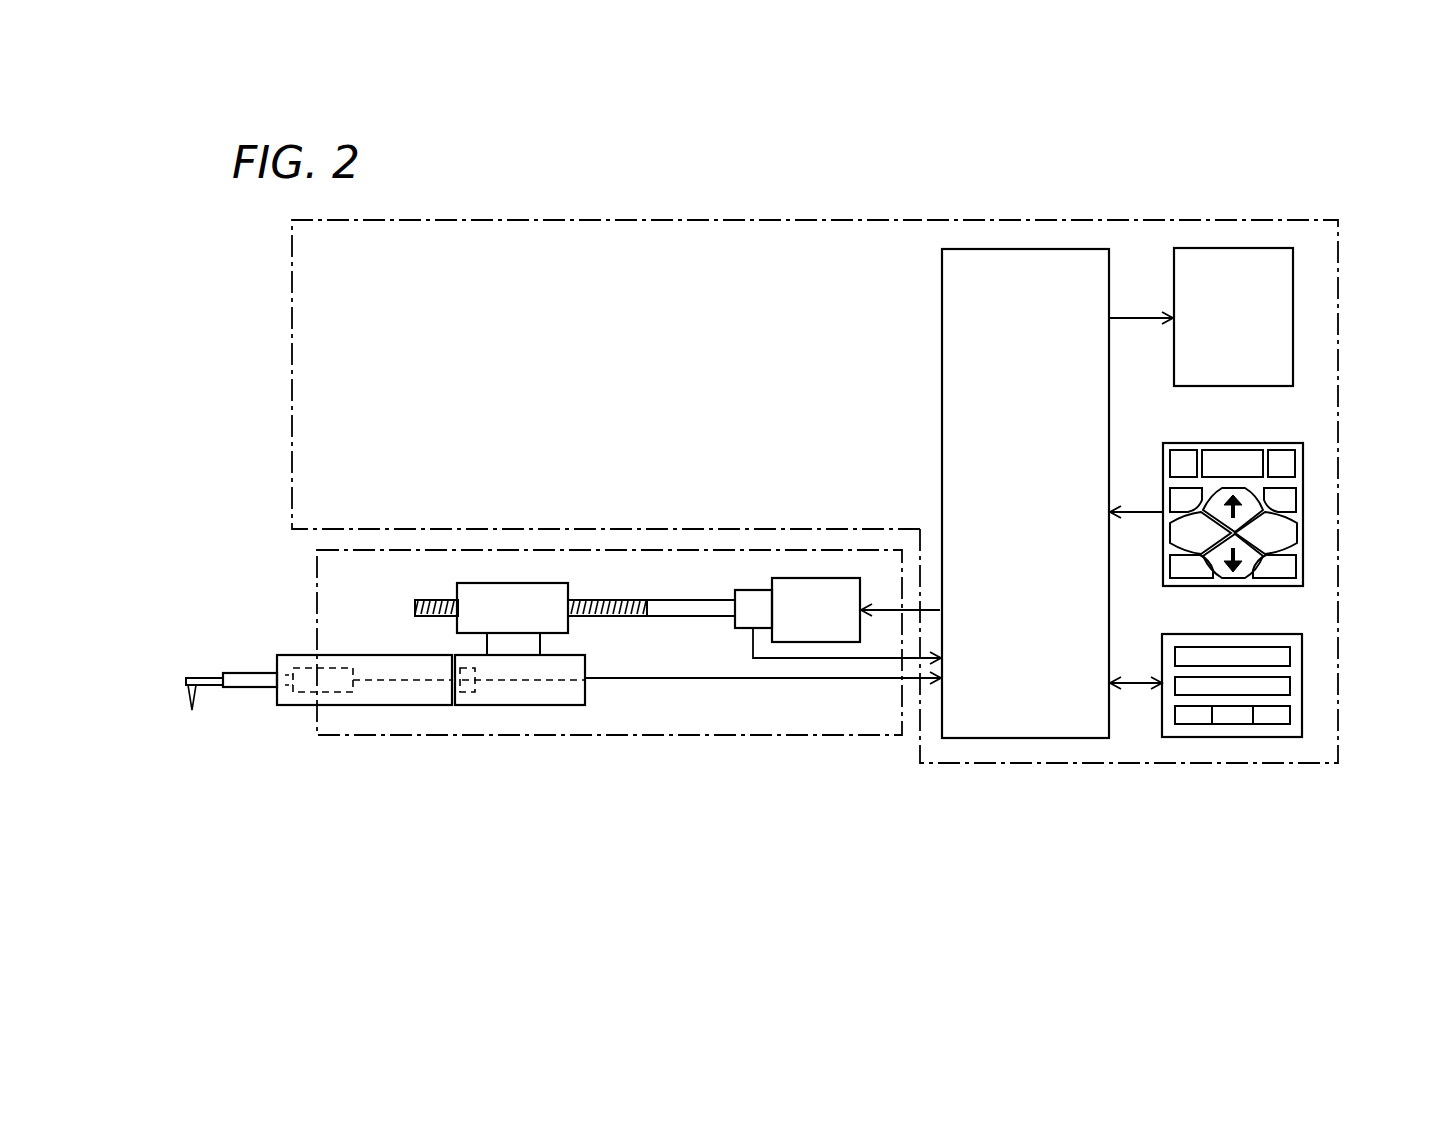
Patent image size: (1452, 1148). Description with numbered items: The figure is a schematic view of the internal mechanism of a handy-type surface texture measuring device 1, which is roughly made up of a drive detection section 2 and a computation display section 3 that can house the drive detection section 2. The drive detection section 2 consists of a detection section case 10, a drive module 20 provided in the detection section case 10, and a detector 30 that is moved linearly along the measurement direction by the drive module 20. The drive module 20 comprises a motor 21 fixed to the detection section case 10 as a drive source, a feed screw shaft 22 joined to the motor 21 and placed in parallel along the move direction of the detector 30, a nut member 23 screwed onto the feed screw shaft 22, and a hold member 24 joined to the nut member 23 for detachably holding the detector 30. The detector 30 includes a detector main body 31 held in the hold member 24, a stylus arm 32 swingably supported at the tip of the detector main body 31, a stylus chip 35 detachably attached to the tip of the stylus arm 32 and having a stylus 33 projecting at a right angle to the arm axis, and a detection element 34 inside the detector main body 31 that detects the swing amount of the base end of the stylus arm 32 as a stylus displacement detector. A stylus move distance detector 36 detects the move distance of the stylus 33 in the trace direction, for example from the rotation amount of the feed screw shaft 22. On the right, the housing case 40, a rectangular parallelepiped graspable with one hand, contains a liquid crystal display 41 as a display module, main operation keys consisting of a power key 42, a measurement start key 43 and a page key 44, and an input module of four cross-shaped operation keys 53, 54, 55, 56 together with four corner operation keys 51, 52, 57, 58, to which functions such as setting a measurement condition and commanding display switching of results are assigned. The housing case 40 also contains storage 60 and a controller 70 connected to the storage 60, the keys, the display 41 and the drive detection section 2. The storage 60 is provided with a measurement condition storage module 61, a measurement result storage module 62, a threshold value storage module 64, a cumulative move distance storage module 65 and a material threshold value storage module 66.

The surface texture measuring device 1 is at (622, 170).
The drive detection section 2 is at (317, 568).
The computation display section 3 is at (292, 300).
The detection section case 10 is at (808, 738).
The drive module 20 is at (742, 770).
The motor 21 is at (793, 583).
The feed screw shaft 22 is at (615, 618).
The nut member 23 is at (553, 590).
The hold member 24 is at (586, 690).
The detector 30 is at (252, 780).
The detector main body 31 is at (420, 706).
The stylus arm 32 is at (237, 688).
The stylus 33 is at (184, 703).
The detection element 34 is at (313, 706).
The stylus chip 35 is at (197, 678).
The stylus move distance detector 36 is at (740, 630).
The housing case 40 is at (845, 222).
The liquid crystal display 41 is at (1293, 323).
The power key 42 is at (1182, 452).
The measurement start key 43 is at (1228, 455).
The page key 44 is at (1280, 455).
The operation key 51 is at (1178, 500).
The operation key 52 is at (1288, 498).
The cross-shaped operation key 53 is at (1250, 509).
The cross-shaped operation key 54 is at (1178, 528).
The cross-shaped operation key 55 is at (1287, 533).
The cross-shaped operation key 56 is at (1232, 578).
The operation key 57 is at (1182, 578).
The operation key 58 is at (1287, 572).
The storage 60 is at (1302, 727).
The measurement condition storage module 61 is at (1290, 660).
The measurement result storage module 62 is at (1290, 690).
The threshold value storage module 64 is at (1185, 724).
The cumulative move distance storage module 65 is at (1228, 724).
The material threshold value storage module 66 is at (1265, 724).
The controller 70 is at (1033, 738).